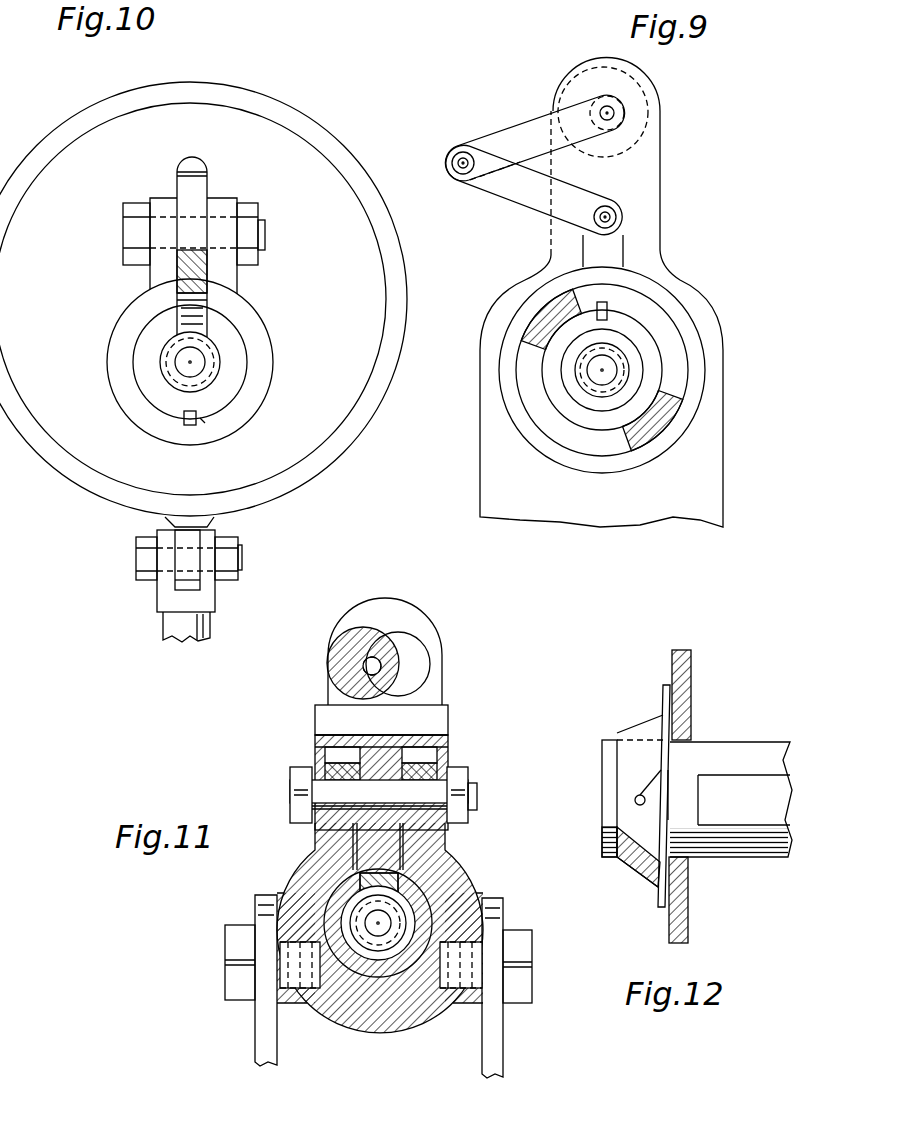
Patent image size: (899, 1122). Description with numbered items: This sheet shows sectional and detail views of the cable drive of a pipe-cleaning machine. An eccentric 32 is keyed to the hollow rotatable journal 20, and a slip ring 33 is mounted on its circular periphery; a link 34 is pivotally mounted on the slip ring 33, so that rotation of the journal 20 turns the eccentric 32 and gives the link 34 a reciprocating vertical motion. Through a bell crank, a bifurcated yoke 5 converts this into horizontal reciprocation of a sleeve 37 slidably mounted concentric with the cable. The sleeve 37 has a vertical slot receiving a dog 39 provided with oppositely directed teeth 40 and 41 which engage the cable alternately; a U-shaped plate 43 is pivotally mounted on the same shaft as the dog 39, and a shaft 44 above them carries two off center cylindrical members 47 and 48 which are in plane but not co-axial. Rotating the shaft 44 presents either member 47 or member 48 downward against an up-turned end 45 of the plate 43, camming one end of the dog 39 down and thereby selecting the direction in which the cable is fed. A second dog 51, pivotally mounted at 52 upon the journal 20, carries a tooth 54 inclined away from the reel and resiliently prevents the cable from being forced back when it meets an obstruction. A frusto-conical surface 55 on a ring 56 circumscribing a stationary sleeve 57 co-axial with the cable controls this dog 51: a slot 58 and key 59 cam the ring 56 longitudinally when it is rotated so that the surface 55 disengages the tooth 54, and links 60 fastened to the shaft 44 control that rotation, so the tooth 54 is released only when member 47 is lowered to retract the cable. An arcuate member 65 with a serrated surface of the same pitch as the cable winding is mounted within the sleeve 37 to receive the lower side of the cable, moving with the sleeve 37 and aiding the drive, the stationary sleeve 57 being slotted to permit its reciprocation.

In FIG. 11, the bifurcated yoke 5 is at (255, 1042).
In FIG. 10, the hollow rotatable journal 20 is at (215, 356).
In FIG. 10, the eccentric 32 is at (365, 300).
In FIG. 10, the slip ring 33 is at (343, 163).
In FIG. 10, the link 34 is at (210, 622).
In FIG. 11, the sleeve 37 is at (460, 878).
In FIG. 11, the dog 39 is at (418, 756).
In FIG. 11, the tooth 40 is at (452, 847).
In FIG. 11, the tooth 41 is at (415, 793).
In FIG. 11, the U-shaped plate 43 is at (357, 734).
In FIG. 11, the shaft 44 is at (390, 657).
In FIG. 11, the up-turned end 45 is at (437, 716).
In FIG. 9, the off center cylindrical member 47 is at (572, 70).
In FIG. 11, the off center cylindrical member 47 is at (430, 655).
In FIG. 9, the off center cylindrical member 48 is at (647, 95).
In FIG. 11, the off center cylindrical member 48 is at (348, 637).
In FIG. 10, the dog 51 is at (207, 273).
In FIG. 10, the pivot 52 is at (218, 223).
In FIG. 10, the tooth 54 is at (213, 345).
In FIG. 9, the frusto-conical surface 55 is at (673, 362).
In FIG. 12, the frusto-conical surface 55 is at (637, 727).
In FIG. 12, the ring 56 is at (640, 870).
In FIG. 9, the stationary sleeve 57 is at (642, 394).
In FIG. 12, the stationary sleeve 57 is at (602, 850).
In FIG. 9, the slot 58 is at (587, 303).
In FIG. 12, the slot 58 is at (640, 790).
In FIG. 9, the key 59 is at (613, 303).
In FIG. 12, the key 59 is at (635, 800).
In FIG. 9, the links 60 is at (517, 203).
In FIG. 12, the links 60 is at (672, 793).
In FIG. 11, the arcuate member 65 is at (400, 977).